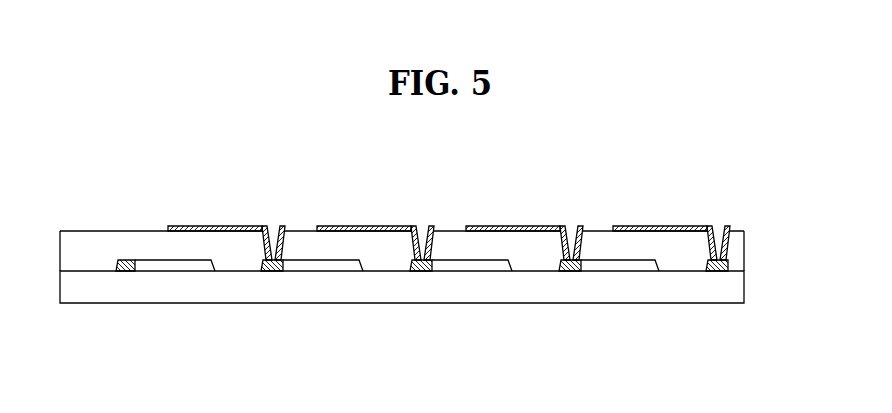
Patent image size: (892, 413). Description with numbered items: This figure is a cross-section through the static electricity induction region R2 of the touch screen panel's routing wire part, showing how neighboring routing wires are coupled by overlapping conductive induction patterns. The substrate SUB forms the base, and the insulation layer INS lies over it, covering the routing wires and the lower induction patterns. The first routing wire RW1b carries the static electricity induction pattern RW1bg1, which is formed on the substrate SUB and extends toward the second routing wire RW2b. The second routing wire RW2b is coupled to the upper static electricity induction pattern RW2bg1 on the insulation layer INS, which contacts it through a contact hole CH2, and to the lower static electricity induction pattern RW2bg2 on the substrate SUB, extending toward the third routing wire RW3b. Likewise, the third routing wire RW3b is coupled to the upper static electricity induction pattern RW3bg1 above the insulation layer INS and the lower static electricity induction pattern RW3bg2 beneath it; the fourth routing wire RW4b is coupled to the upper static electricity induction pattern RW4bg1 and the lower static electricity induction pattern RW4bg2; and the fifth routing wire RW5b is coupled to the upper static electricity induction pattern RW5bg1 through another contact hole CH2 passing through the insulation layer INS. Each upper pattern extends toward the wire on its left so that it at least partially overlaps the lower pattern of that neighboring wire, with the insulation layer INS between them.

The static electricity induction region R2 is at (80, 155).
The insulation layer INS is at (745, 243).
The substrate SUB is at (745, 290).
The contact hole CH2 is at (274, 236).
The first 2-2 routing wire RW1b is at (124, 272).
The 1-1 static electricity induction pattern RW1bg1 is at (185, 272).
The second 2-2 routing wire RW2b is at (270, 272).
The 2-1 static electricity induction pattern RW2bg1 is at (219, 225).
The 1-2 static electricity induction pattern RW2bg2 is at (333, 272).
The third 2-2 routing wire RW3b is at (419, 272).
The 2-2 static electricity induction pattern RW3bg1 is at (368, 225).
The 1-3 static electricity induction pattern RW3bg2 is at (482, 272).
The fourth 2-2 routing wire RW4b is at (568, 272).
The 2-3 static electricity induction pattern RW4bg1 is at (517, 225).
The 1-4 static electricity induction pattern RW4bg2 is at (631, 272).
The fifth 2-2 routing wire RW5b is at (715, 272).
The 2-4 static electricity induction pattern RW5bg1 is at (664, 225).